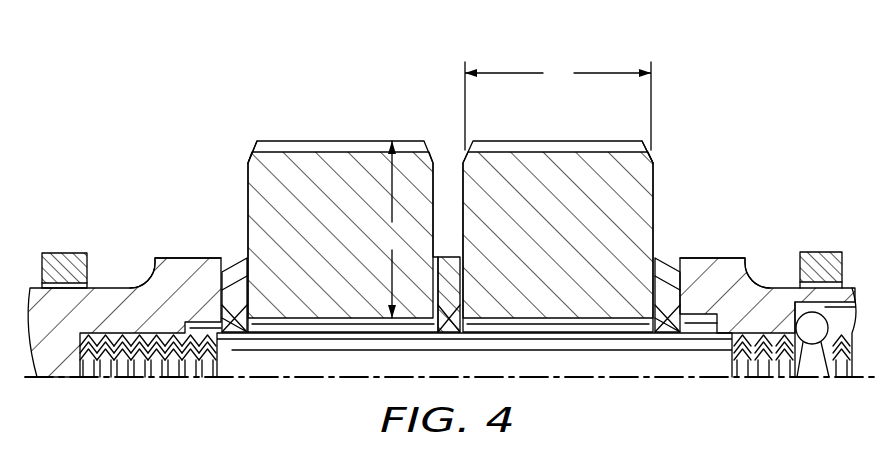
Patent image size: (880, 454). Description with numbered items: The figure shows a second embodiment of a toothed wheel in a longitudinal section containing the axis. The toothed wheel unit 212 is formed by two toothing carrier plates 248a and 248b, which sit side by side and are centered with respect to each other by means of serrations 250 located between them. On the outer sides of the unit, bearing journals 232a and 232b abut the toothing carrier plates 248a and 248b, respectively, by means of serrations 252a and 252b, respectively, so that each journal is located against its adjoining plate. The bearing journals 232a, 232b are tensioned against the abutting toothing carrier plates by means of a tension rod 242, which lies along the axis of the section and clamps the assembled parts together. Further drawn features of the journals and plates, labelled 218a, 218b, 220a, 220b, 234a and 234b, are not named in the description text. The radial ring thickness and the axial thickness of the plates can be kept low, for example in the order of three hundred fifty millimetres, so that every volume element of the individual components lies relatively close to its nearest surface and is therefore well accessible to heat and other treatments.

The toothed wheel unit 212 is at (386, 69).
The first friction pad block 220a is at (338, 141).
The second friction pad block 220b is at (585, 141).
The toothing carrier plate 248a is at (256, 181).
The toothing carrier plate 248b is at (654, 181).
The serrations 252a is at (238, 262).
The serrations 252b is at (665, 262).
The serrations 250 is at (452, 286).
The first hub shoulder 218a is at (108, 288).
The second hub shoulder 218b is at (722, 262).
The first seal ring 234a is at (62, 253).
The second seal ring 234b is at (818, 252).
The bearing journal 232a is at (53, 378).
The bearing journal 232b is at (768, 288).
The tension rod 242 is at (655, 378).